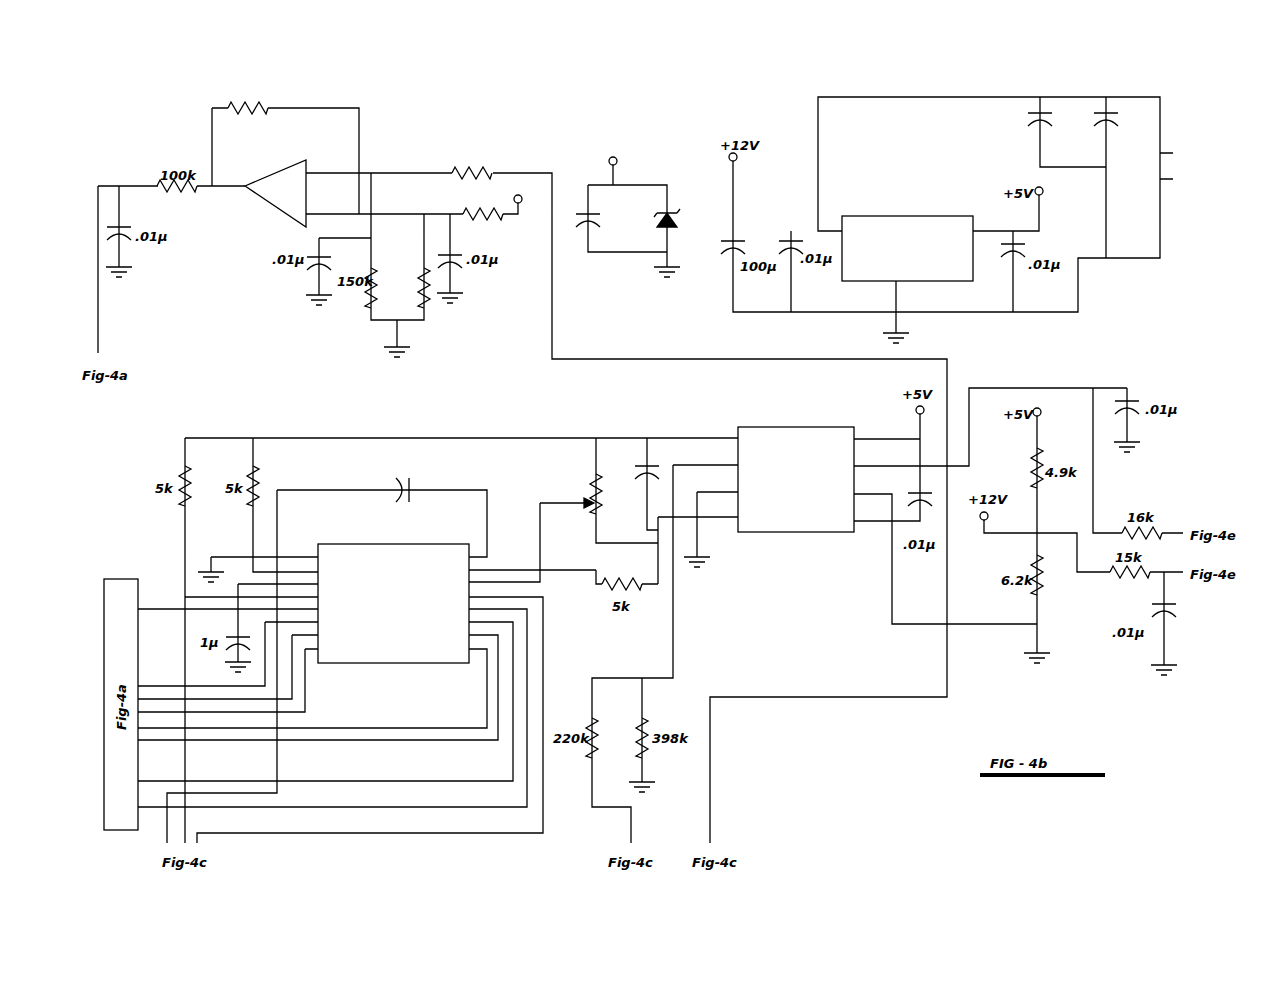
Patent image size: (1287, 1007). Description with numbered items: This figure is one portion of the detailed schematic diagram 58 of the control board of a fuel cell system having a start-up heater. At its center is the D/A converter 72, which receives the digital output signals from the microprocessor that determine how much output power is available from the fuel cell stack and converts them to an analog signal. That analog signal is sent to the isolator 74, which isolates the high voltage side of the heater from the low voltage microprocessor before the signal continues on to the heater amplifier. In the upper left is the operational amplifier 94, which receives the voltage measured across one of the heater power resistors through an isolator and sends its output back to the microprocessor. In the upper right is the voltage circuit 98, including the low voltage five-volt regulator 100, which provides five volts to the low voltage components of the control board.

The detailed schematic diagram 58 is at (634, 112).
The D/A converter 72 is at (378, 543).
The isolator 74 is at (797, 534).
The operational amplifier 94 is at (276, 207).
The voltage circuit 98 is at (1100, 86).
The low voltage 5-volt regulator 100 is at (903, 188).